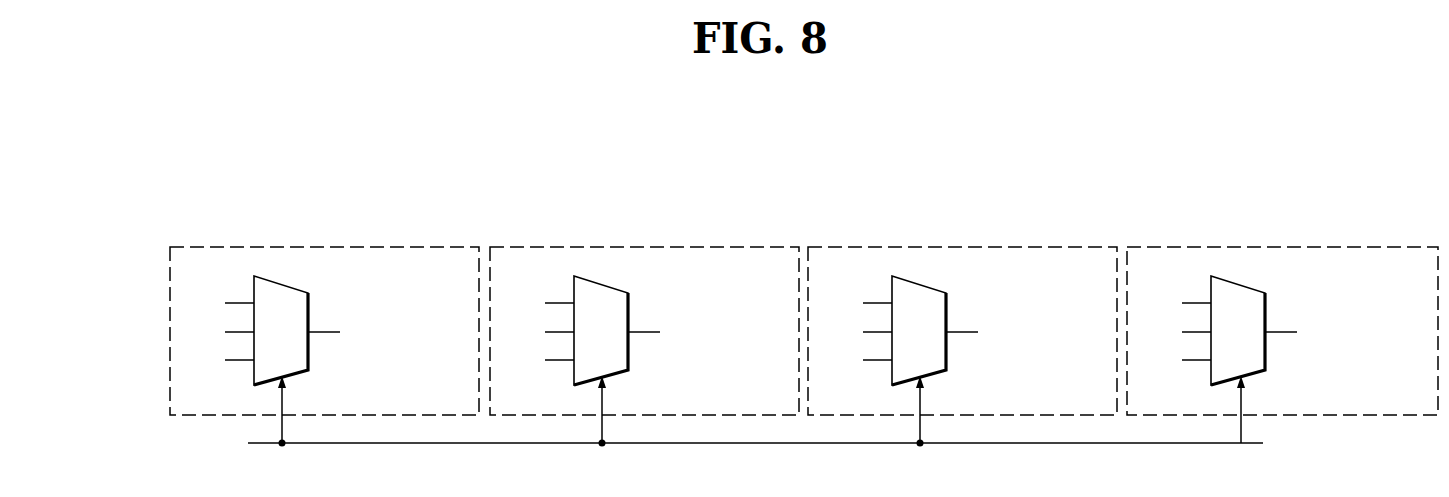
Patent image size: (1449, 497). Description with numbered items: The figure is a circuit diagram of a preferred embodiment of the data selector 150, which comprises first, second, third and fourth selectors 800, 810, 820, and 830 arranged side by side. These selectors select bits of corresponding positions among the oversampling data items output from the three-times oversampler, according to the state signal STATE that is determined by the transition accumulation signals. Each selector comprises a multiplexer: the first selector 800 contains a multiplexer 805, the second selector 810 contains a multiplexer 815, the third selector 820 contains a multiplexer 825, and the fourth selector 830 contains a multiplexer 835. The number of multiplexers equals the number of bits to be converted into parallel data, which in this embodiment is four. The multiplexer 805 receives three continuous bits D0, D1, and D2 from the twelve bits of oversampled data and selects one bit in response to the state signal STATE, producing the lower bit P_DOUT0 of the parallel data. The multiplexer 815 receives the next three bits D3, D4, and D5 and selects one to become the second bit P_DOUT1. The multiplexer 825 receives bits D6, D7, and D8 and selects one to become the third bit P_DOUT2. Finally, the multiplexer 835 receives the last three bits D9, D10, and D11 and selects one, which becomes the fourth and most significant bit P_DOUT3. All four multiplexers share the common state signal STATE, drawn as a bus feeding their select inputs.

The data selector 150 is at (1168, 163).
The first selector 800 is at (305, 245).
The multiplexer 805 is at (312, 304).
The second selector 810 is at (644, 317).
The multiplexer 815 is at (644, 328).
The third selector 820 is at (962, 317).
The multiplexer 825 is at (962, 328).
The fourth selector 830 is at (1282, 315).
The multiplexer 835 is at (1281, 328).